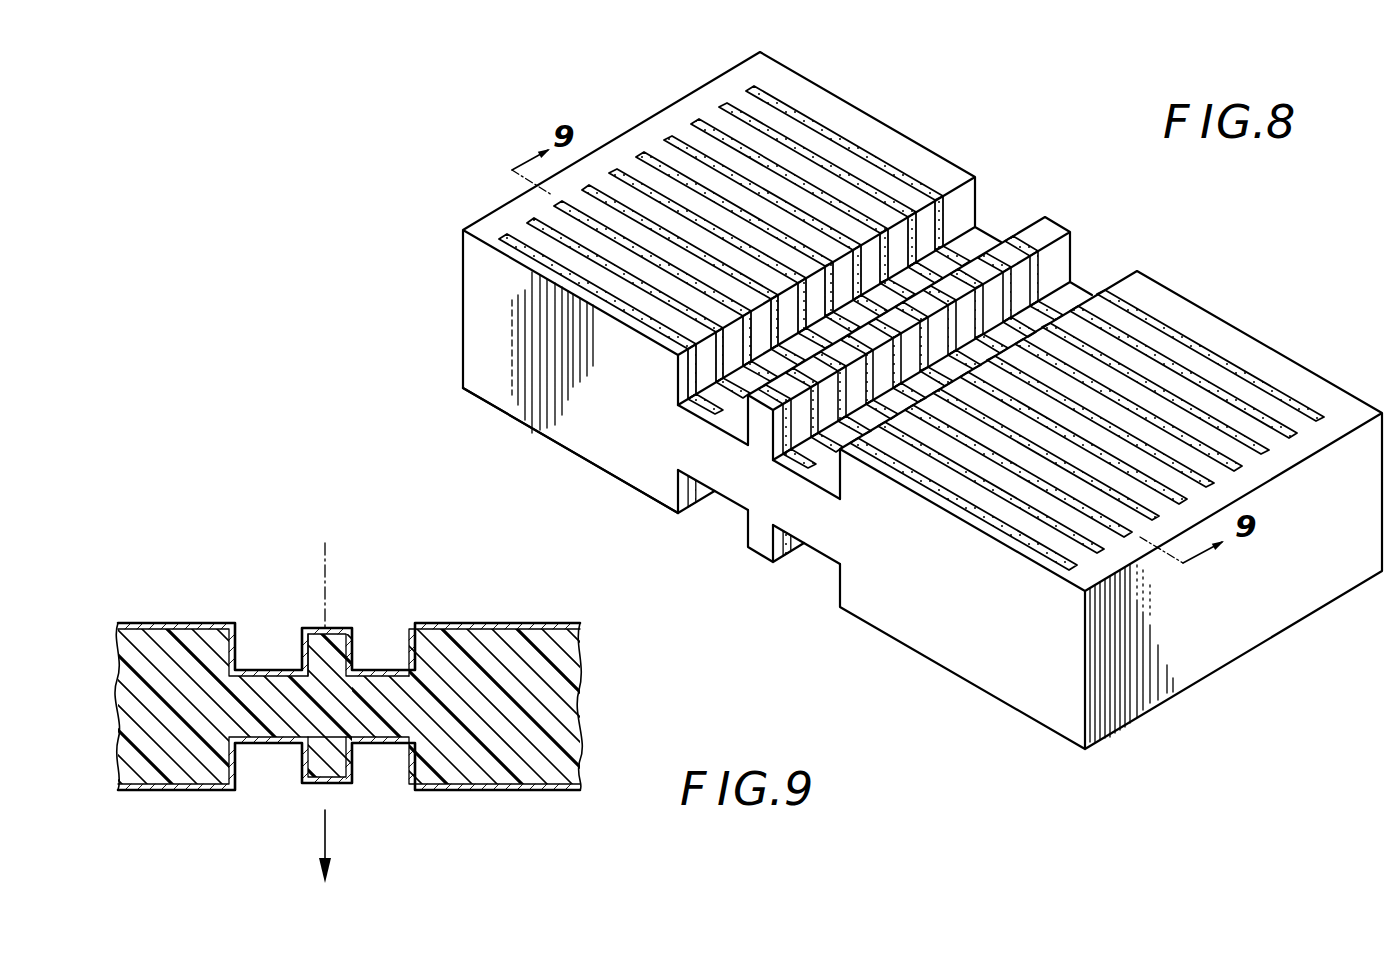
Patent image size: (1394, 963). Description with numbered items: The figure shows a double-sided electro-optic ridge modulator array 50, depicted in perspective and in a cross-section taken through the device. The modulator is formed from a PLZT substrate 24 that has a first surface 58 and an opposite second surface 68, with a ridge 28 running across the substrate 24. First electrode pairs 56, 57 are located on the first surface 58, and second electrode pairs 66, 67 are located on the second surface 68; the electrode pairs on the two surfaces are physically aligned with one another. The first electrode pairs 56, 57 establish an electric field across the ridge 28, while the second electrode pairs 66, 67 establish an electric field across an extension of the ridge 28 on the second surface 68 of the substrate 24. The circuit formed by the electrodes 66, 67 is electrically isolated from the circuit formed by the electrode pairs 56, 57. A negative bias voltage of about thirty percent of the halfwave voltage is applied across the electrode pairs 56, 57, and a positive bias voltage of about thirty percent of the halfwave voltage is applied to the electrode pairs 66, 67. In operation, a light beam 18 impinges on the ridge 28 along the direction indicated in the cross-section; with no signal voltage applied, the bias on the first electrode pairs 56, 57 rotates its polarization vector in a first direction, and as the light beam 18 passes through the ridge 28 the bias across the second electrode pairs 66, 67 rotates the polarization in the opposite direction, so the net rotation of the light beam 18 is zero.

In FIG. 8, the double-sided electro-optic ridge modulator array 50 is at (1028, 110).
In FIG. 8, the first electrode pair 56 is at (697, 123).
In FIG. 9, the first electrode pair 56 is at (193, 622).
In FIG. 8, the first electrode pair 57 is at (1297, 436).
In FIG. 9, the first electrode pair 57 is at (495, 621).
In FIG. 8, the first surface 58 is at (495, 223).
In FIG. 8, the PLZT substrate 24 is at (1027, 684).
In FIG. 9, the PLZT substrate 24 is at (498, 773).
In FIG. 8, the ridge 28 is at (1046, 226).
In FIG. 9, the ridge 28 is at (333, 627).
In FIG. 8, the second electrode pair 66 is at (702, 498).
In FIG. 9, the second electrode pair 66 is at (172, 790).
In FIG. 8, the second electrode pair 67 is at (793, 548).
In FIG. 9, the second electrode pair 67 is at (560, 790).
In FIG. 8, the second surface 68 is at (640, 497).
In FIG. 9, the light beam 18 is at (330, 558).